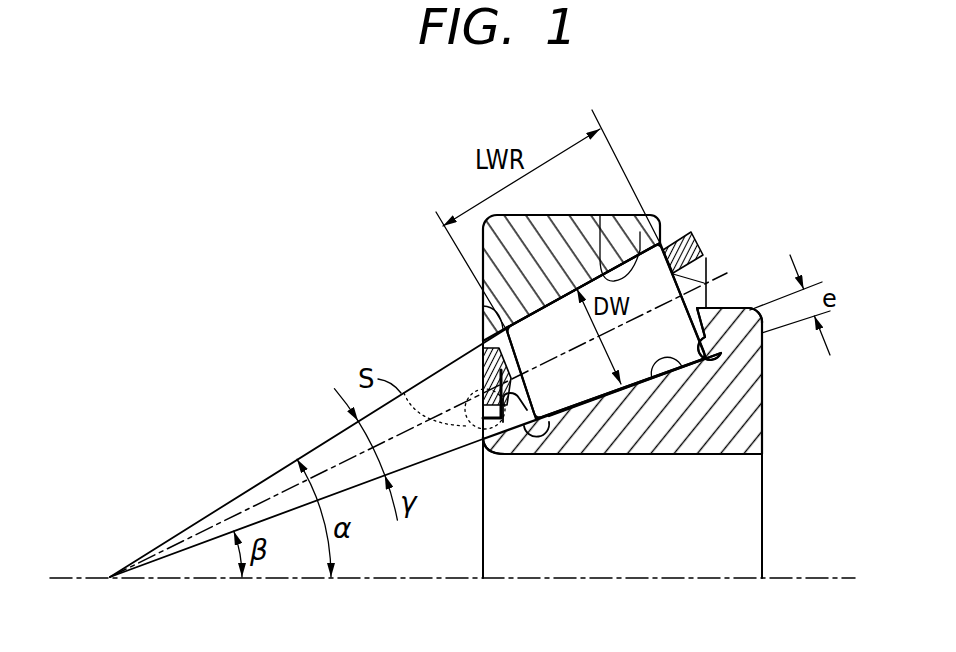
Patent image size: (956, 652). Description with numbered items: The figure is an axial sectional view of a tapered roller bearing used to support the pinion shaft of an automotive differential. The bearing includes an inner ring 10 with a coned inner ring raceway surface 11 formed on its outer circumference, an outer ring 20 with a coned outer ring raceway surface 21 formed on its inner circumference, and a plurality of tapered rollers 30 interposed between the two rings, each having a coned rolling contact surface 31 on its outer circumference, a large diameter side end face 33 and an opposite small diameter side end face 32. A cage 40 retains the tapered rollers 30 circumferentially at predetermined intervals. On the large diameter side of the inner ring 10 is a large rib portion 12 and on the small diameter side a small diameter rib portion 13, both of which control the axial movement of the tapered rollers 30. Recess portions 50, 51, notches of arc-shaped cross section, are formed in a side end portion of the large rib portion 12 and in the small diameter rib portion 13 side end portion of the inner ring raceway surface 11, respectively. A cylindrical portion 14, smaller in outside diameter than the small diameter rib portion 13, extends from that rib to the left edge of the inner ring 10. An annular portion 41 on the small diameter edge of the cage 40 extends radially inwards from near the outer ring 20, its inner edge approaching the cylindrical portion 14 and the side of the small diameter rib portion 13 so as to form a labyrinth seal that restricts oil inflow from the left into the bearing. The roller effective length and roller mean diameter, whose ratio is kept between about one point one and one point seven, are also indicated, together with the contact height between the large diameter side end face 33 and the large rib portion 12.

The inner ring 10 is at (763, 416).
The inner ring raceway surface 11 is at (663, 384).
The large rib portion 12 is at (713, 315).
The small diameter rib portion 13 is at (516, 436).
The cylindrical portion 14 is at (487, 445).
The outer ring 20 is at (600, 215).
The outer ring raceway surface 21 is at (641, 232).
The tapered roller 30 is at (525, 322).
The rolling contact surface 31 is at (612, 395).
The small end face of roller 32 is at (481, 378).
The large diameter side end face 33 is at (686, 298).
The cage 40 is at (692, 246).
The annular portion 41 is at (482, 405).
The recess portion 50 is at (722, 346).
The recess portion 51 is at (533, 434).